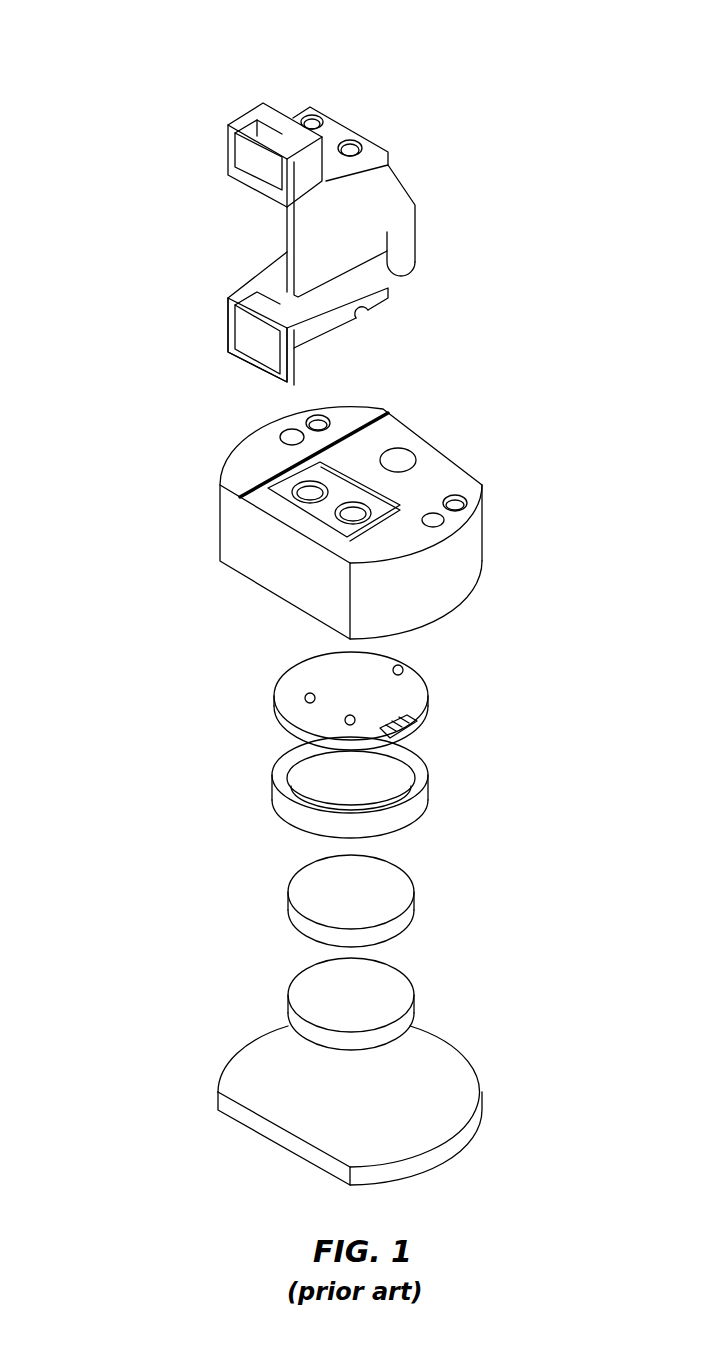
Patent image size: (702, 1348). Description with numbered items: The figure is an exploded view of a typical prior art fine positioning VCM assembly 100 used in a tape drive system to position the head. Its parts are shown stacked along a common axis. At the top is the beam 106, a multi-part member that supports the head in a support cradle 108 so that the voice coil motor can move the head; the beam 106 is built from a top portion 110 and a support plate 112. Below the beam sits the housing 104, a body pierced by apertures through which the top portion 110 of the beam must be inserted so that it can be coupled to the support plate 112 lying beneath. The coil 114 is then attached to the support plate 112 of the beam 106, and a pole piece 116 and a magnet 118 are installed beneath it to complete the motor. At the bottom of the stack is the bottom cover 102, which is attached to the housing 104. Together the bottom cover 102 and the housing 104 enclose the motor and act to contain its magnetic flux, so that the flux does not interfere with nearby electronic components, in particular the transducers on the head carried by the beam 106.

The fine positioning VCM assembly 100 is at (124, 38).
The bottom cover 102 is at (448, 1057).
The housing 104 is at (476, 538).
The beam 106 is at (390, 188).
The support cradle 108 is at (227, 327).
The top portion 110 is at (362, 322).
The support plate 112 is at (414, 682).
The coil 114 is at (428, 797).
The pole piece 116 is at (414, 916).
The magnet 118 is at (412, 1022).